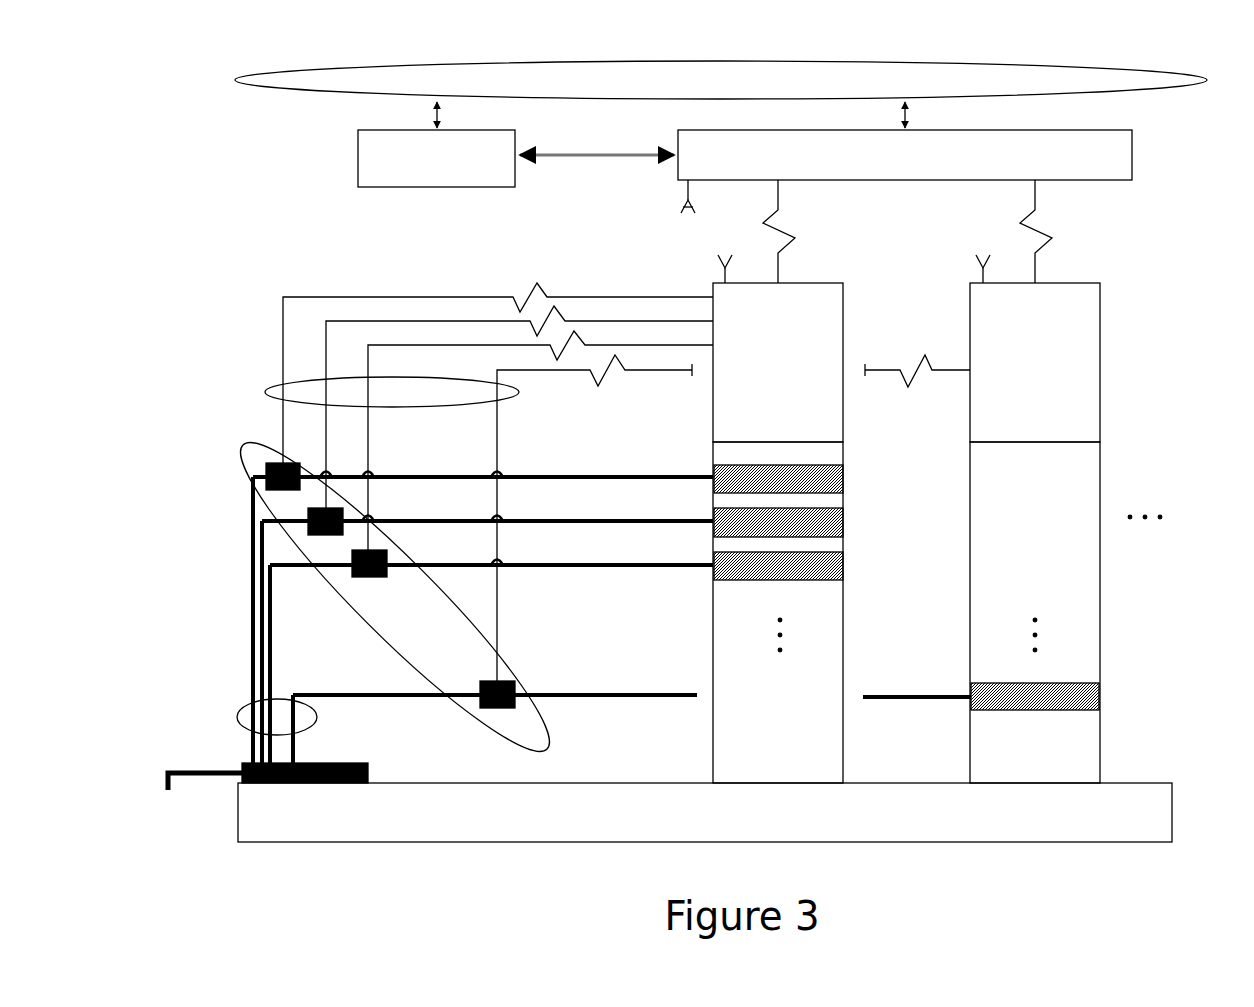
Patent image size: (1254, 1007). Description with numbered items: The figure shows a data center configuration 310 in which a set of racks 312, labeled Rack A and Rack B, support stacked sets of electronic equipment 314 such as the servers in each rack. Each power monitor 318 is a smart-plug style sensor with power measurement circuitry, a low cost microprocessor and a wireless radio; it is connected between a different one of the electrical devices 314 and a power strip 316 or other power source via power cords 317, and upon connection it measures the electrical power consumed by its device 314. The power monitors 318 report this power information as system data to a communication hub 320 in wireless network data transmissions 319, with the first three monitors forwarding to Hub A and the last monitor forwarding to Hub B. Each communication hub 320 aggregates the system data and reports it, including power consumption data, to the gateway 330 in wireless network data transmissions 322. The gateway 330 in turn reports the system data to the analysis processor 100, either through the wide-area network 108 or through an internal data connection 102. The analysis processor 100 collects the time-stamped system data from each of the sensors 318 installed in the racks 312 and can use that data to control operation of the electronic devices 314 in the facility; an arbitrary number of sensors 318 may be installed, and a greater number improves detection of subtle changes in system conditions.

The analysis processor 100 is at (402, 158).
The internal data connection 102 is at (597, 144).
The wide-area network 108 is at (721, 94).
The data center configuration 310 is at (678, 508).
The rack 312 is at (951, 612).
The electronic equipment 314 is at (940, 586).
The power strip 316 is at (256, 762).
The power cords 317 is at (243, 625).
The power monitor 318 is at (434, 591).
The wireless network data transmissions 319 is at (444, 482).
The communication hub 320 is at (940, 348).
The wireless network data transmissions 322 is at (878, 231).
The gateway 330 is at (936, 171).